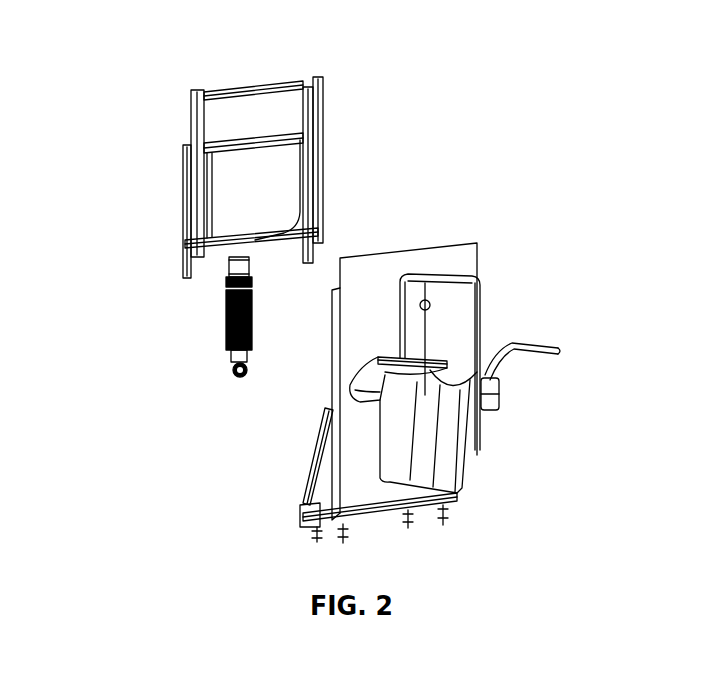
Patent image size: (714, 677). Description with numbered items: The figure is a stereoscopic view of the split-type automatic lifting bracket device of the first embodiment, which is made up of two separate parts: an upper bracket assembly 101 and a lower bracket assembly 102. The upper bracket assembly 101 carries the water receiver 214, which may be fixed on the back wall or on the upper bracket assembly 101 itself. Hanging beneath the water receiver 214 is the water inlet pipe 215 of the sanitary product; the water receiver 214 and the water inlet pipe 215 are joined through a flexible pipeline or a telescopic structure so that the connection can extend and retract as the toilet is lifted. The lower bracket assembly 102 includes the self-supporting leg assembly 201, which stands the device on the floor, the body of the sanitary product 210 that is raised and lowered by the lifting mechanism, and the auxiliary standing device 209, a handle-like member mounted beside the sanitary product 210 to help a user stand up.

The upper bracket assembly 101 is at (310, 140).
The lower bracket assembly 102 is at (363, 320).
The self-supporting leg assembly 201 is at (307, 480).
The auxiliary standing device 209 is at (525, 343).
The body of sanitary product 210 is at (437, 435).
The water receiver 214 is at (245, 207).
The water inlet pipe of sanitary product 215 is at (227, 333).